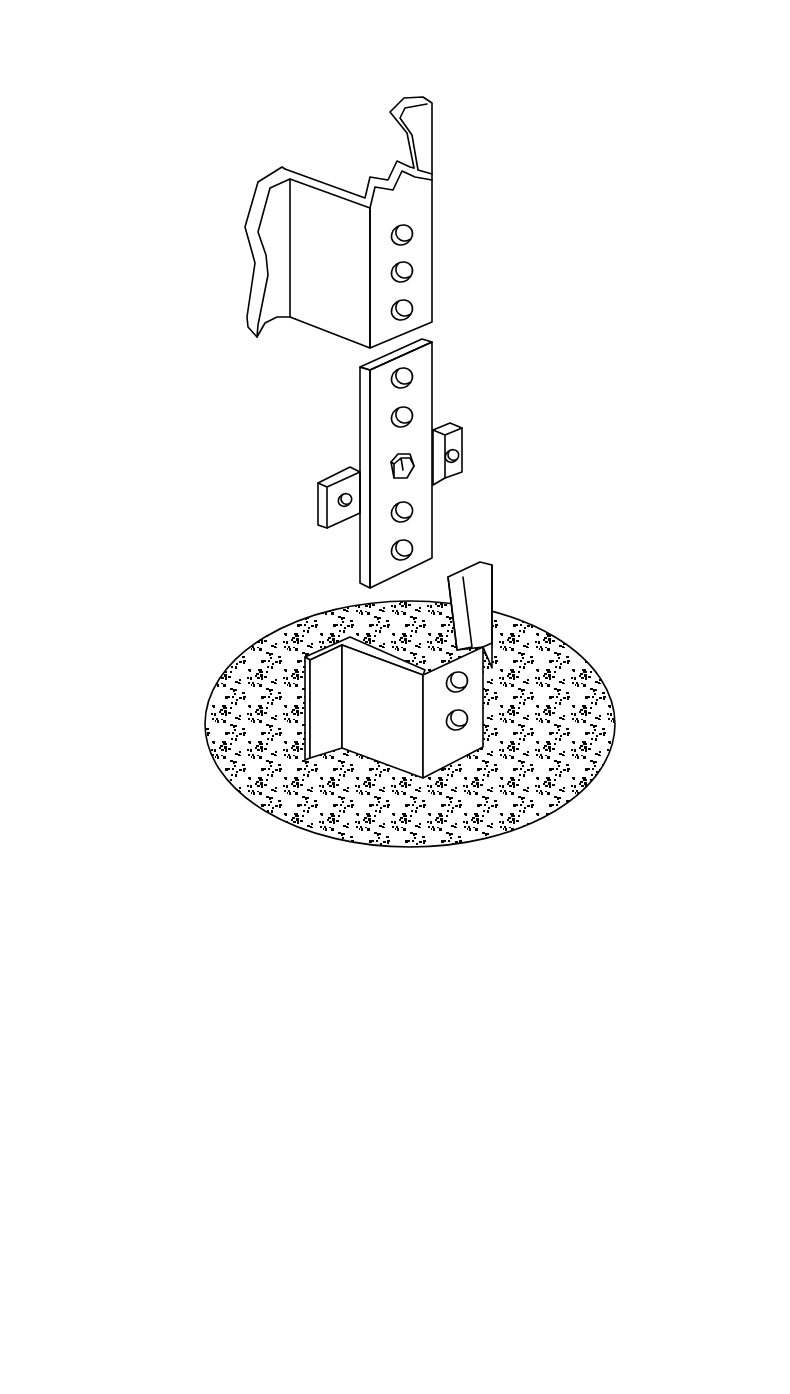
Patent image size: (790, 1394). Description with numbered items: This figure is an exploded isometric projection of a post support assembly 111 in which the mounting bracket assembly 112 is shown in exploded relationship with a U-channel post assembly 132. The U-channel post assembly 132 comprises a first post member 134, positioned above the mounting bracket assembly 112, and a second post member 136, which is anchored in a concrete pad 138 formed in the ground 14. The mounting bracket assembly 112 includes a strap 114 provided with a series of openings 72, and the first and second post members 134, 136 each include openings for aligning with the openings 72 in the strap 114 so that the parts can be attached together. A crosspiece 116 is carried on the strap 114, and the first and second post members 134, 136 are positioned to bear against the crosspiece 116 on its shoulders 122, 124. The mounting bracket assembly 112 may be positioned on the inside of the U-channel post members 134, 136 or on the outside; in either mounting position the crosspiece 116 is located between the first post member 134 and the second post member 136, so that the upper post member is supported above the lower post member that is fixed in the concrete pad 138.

The post support assembly 111 is at (147, 392).
The mounting bracket assembly 112 is at (552, 482).
The strap 114 is at (435, 345).
The crosspiece 116 is at (462, 448).
The shoulder 122 is at (440, 425).
The shoulder 124 is at (445, 478).
The U-channel post assembly 132 is at (450, 227).
The first post member 134 is at (433, 138).
The second post member 136 is at (495, 592).
The concrete pad 138 is at (553, 698).
The ground 14 is at (612, 847).
The openings 72 is at (398, 377).